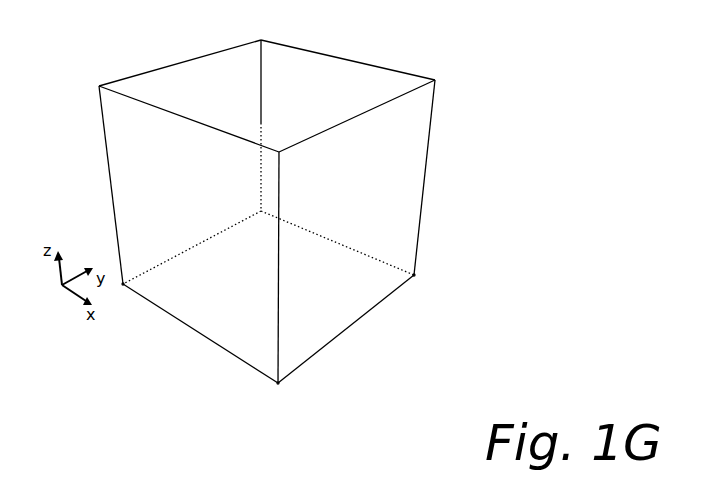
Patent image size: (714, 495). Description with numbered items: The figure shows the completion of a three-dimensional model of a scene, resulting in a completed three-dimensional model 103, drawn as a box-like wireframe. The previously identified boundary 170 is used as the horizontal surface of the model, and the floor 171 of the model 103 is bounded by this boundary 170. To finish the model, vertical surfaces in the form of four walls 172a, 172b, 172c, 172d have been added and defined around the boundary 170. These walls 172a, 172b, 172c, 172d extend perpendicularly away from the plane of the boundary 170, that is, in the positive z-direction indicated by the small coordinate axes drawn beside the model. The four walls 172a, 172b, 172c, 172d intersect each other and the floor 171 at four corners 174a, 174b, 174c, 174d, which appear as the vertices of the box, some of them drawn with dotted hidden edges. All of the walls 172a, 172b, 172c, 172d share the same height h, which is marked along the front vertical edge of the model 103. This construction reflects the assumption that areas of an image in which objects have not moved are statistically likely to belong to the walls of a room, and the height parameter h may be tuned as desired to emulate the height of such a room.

The completed three-dimensional model 103 is at (313, 231).
The boundary 170 is at (358, 322).
The floor 171 is at (300, 345).
The wall 172a is at (402, 195).
The wall 172b is at (122, 167).
The wall 172c is at (205, 78).
The wall 172d is at (352, 82).
The corner 174a is at (414, 277).
The corner 174b is at (278, 383).
The corner 174c is at (123, 287).
The corner 174d is at (260, 210).